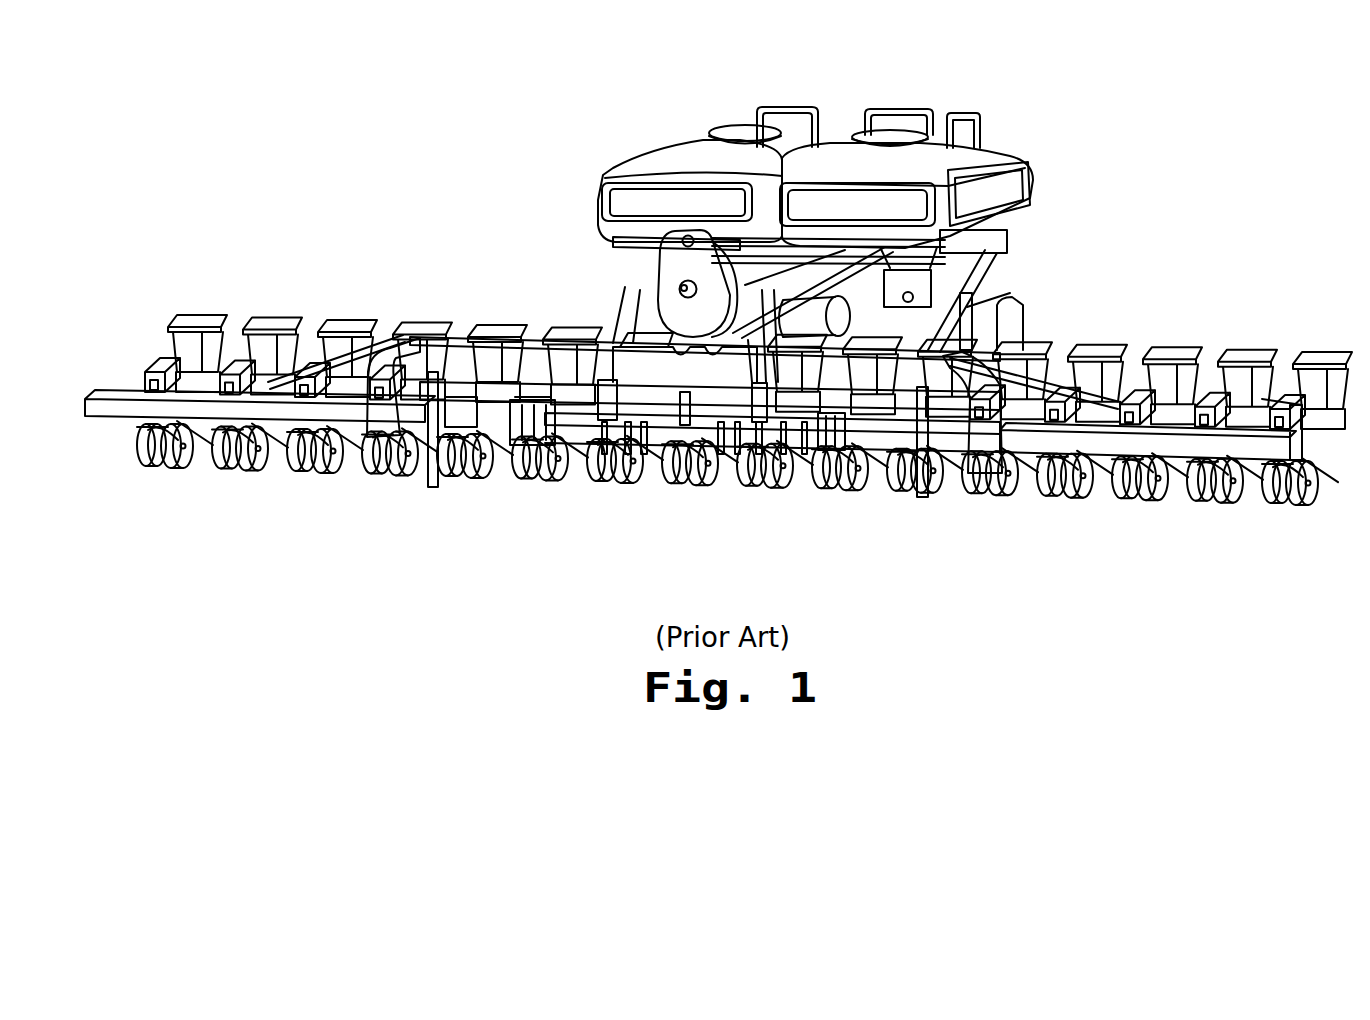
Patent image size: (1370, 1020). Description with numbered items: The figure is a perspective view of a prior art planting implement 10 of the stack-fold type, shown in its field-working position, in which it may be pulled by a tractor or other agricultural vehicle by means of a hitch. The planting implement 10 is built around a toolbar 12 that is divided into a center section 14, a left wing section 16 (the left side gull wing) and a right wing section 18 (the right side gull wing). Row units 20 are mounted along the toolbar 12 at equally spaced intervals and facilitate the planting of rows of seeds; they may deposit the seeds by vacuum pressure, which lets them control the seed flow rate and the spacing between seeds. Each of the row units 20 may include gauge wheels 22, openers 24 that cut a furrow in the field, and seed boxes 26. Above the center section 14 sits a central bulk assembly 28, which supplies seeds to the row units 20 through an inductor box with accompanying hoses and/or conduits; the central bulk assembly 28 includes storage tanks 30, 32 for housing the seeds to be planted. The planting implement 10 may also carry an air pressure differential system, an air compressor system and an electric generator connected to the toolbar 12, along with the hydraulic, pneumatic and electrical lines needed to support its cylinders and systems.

The planting implement 10 is at (717, 318).
The toolbar 12 is at (1030, 438).
The center section 14 is at (700, 430).
The left wing section 16 is at (120, 406).
The right wing section 18 is at (1243, 448).
The row units 20 is at (189, 308).
The gauge wheels 22 is at (332, 460).
The openers 24 is at (463, 492).
The seed boxes 26 is at (273, 345).
The central bulk assembly 28 is at (847, 173).
The storage tank 30 is at (652, 163).
The storage tank 32 is at (1018, 168).